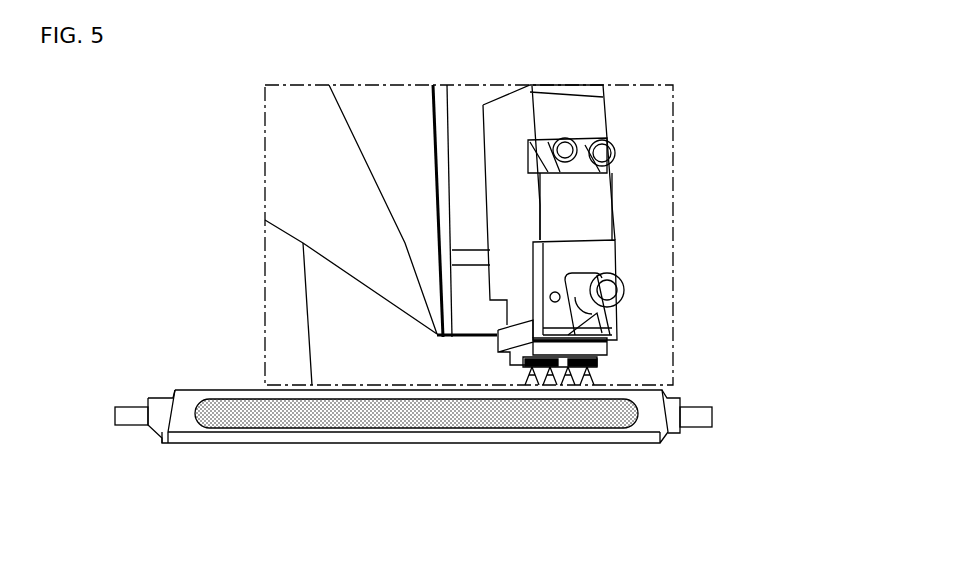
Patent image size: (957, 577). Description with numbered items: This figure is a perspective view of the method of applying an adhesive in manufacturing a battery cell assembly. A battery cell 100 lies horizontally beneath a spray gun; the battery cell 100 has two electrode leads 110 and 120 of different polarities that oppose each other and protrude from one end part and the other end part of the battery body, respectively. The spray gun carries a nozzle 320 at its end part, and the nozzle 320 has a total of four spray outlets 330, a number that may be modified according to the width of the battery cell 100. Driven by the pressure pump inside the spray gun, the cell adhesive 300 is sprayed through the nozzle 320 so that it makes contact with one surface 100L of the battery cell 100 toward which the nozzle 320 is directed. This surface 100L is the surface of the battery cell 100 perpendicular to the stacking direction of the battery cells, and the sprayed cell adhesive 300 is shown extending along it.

The battery cell 100 is at (477, 444).
The one surface of the battery cell 100L is at (183, 445).
The electrode lead 110 is at (137, 413).
The electrode lead 120 is at (712, 413).
The cell adhesive 300 is at (572, 420).
The nozzle 320 is at (607, 350).
The spray outlets 330 is at (520, 275).